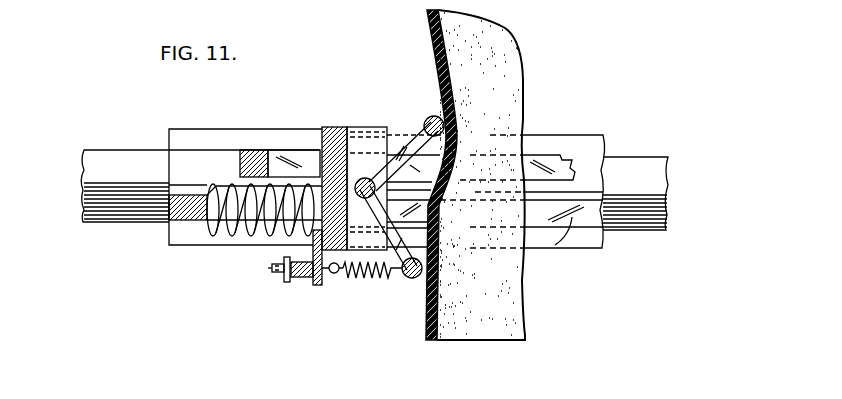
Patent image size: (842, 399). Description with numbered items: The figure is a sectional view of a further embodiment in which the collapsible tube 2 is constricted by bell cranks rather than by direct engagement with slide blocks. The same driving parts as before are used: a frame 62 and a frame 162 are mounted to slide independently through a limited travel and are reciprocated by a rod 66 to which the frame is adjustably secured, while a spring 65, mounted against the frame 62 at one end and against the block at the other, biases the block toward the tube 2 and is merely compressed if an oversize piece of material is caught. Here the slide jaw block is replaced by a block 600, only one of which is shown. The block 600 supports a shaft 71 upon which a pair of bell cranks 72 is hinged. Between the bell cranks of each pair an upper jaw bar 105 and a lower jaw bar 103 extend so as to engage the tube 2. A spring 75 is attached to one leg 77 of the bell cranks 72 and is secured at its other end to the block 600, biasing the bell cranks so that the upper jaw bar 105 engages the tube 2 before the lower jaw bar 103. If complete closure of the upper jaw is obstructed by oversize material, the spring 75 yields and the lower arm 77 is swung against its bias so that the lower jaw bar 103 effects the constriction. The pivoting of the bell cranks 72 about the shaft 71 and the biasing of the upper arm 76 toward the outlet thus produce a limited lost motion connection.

The collapsible tube 2 is at (427, 25).
The upper jaw bar 105 is at (427, 116).
The upper arm 76 is at (405, 125).
The bell crank 72 is at (377, 163).
The block 600 is at (334, 127).
The shaft 71 is at (333, 187).
The frame 162 is at (254, 150).
The rod 66 is at (100, 152).
The frame 62 is at (220, 245).
The spring 65 is at (257, 245).
The spring 75 is at (365, 280).
The lower arm 77 is at (405, 282).
The lower jaw bar 103 is at (418, 283).